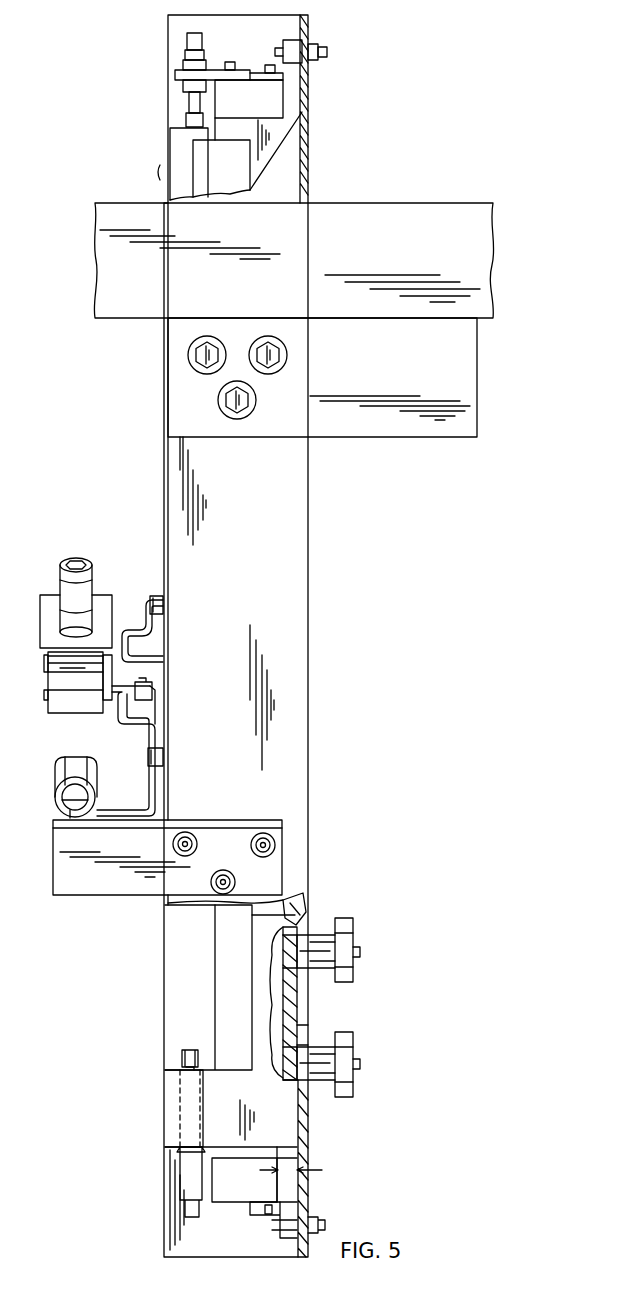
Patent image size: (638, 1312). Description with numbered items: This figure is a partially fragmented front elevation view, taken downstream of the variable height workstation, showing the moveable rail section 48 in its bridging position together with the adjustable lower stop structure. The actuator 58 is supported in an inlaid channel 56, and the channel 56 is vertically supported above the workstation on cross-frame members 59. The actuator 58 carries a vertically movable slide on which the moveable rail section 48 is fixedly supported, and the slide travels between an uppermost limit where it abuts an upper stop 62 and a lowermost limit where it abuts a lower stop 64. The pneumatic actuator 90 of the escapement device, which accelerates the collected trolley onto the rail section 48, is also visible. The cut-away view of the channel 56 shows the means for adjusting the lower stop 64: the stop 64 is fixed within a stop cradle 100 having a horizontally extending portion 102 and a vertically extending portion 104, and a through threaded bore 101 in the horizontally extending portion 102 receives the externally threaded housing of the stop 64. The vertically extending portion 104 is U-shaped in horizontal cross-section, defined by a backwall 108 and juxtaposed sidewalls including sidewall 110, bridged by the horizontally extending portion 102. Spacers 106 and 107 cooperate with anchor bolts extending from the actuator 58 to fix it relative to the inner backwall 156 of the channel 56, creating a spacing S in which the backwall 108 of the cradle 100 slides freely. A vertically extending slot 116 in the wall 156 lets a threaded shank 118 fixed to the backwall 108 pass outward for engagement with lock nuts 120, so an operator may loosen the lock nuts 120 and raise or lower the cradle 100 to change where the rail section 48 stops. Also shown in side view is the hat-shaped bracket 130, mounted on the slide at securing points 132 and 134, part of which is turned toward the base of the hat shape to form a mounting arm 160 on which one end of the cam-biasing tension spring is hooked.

The moveable rail section 48 is at (58, 775).
The channel 56 is at (308, 662).
The actuator 58 is at (288, 110).
The cross-frame members 59 is at (465, 352).
The upper stop 62 is at (185, 117).
The lower stop 64 is at (182, 1062).
The pneumatic actuator 90 is at (84, 572).
The stop cradle 100 is at (159, 1150).
The through threaded bore 101 is at (200, 1125).
The horizontally extending portion 102 is at (176, 1100).
The vertically extending portion 104 is at (258, 937).
The spacer 106 is at (290, 47).
The spacer 107 is at (290, 1218).
The backwall 108 is at (290, 1005).
The sidewall 110 is at (258, 1012).
The vertically extending slot 116 is at (300, 1036).
The threaded shank 118 is at (353, 951).
The lock nuts 120 is at (342, 920).
The hat-shaped bracket 130 is at (121, 626).
The securing point 132 is at (152, 752).
The securing point 134 is at (150, 600).
The inner backwall 156 is at (300, 898).
The mounting arm 160 is at (127, 710).
The spacing S is at (322, 1170).